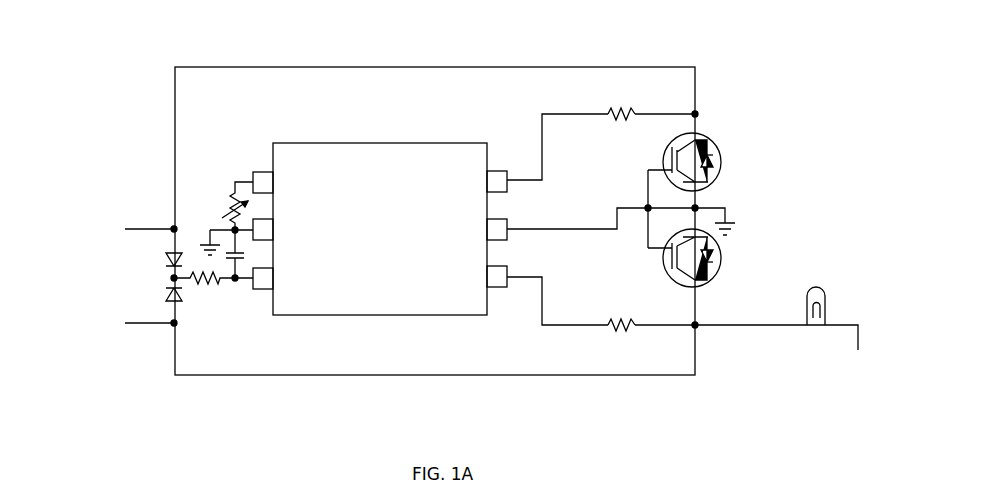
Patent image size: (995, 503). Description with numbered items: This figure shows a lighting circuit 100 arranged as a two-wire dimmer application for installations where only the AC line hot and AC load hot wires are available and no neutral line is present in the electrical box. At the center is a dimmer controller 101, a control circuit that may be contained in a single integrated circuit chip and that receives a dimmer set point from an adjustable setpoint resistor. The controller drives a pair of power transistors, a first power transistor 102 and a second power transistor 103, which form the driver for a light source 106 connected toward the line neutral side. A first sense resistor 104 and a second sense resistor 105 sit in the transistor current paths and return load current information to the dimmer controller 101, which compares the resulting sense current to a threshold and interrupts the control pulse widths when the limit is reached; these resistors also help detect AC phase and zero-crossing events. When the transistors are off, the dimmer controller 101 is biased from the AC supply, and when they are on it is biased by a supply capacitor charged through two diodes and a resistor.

The lighting circuit 100 is at (370, 33).
The dimmer controller 101 is at (327, 143).
The first power transistor 102 is at (710, 140).
The second power transistor 103 is at (710, 280).
The first sense resistor 104 is at (617, 122).
The second sense resistor 105 is at (620, 333).
The light source 106 is at (826, 298).